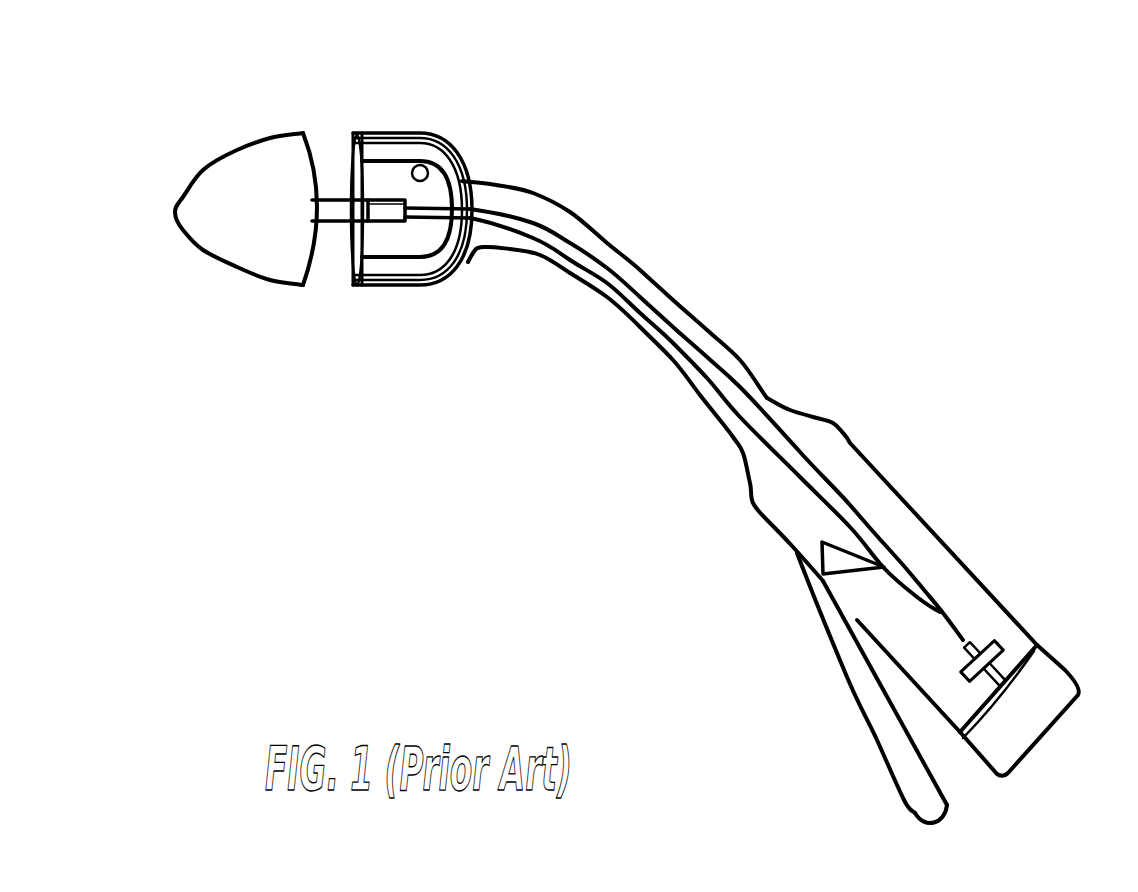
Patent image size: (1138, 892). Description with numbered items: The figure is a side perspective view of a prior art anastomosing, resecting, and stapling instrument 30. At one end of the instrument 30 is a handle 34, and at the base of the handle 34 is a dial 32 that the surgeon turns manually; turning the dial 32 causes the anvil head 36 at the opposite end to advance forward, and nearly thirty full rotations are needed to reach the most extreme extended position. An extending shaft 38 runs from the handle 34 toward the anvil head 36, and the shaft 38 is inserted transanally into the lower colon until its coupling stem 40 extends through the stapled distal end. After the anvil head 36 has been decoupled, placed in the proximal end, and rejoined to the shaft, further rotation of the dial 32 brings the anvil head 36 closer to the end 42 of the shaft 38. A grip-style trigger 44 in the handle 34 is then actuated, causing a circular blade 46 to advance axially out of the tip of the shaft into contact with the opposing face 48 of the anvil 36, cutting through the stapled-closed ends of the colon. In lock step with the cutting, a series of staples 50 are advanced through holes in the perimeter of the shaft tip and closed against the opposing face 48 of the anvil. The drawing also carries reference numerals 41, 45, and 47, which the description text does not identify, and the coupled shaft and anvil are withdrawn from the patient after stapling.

The instrument 30 is at (745, 235).
The dial 32 is at (1062, 667).
The handle 34 is at (877, 490).
The anvil head 36 is at (267, 150).
The extending shaft 38 is at (630, 287).
The coupling stem 40 is at (368, 211).
The support rod 41 is at (333, 197).
The end of the shaft 42 is at (403, 137).
The grip-style trigger 44 is at (862, 677).
The inner cup 45 is at (420, 290).
The circular blade 46 is at (440, 188).
The sheath 47 is at (467, 188).
The opposing face 48 is at (317, 262).
The staples 50 is at (383, 216).